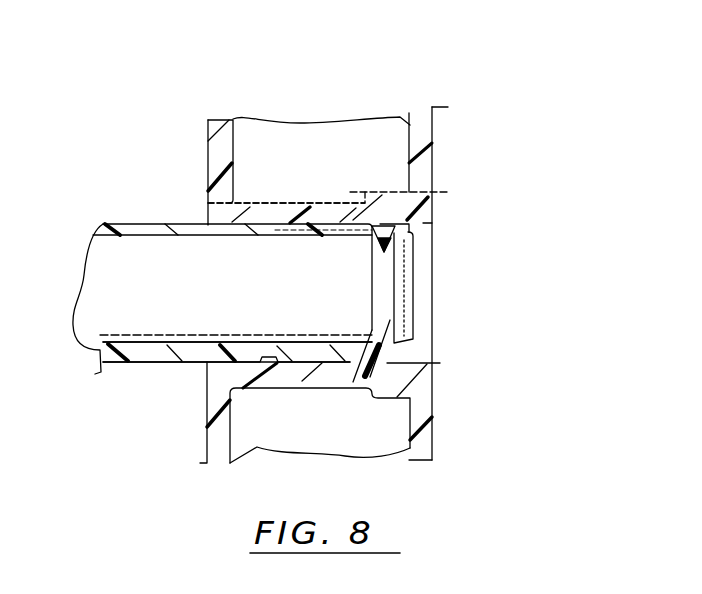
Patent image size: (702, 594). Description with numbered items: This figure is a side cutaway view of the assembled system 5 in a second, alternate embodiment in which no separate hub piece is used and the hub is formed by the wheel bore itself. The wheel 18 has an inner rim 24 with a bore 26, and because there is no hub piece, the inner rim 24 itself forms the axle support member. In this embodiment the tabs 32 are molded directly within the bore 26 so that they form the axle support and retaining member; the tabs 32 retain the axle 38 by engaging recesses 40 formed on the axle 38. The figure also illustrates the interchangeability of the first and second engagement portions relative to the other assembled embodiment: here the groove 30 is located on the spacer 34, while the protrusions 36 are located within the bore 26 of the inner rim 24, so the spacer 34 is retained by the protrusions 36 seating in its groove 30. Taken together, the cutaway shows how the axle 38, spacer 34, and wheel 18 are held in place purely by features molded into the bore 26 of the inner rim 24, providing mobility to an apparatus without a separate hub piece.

The system 5 is at (507, 135).
The wheel 18 is at (428, 180).
The inner rim 24 is at (427, 215).
The bore 26 is at (418, 240).
The groove 30 is at (256, 229).
The tabs 32 is at (376, 362).
The spacer 34 is at (135, 190).
The protrusions 36 is at (254, 346).
The axle 38 is at (178, 311).
The recesses 40 is at (397, 341).